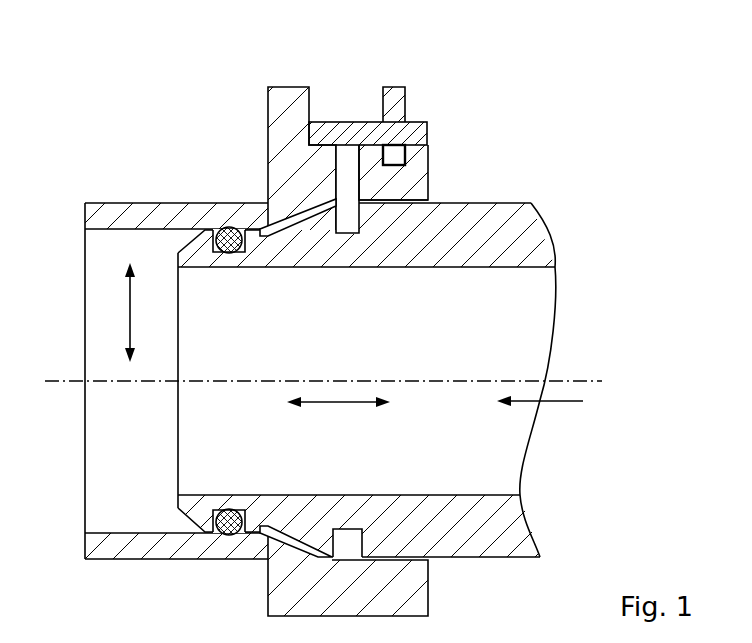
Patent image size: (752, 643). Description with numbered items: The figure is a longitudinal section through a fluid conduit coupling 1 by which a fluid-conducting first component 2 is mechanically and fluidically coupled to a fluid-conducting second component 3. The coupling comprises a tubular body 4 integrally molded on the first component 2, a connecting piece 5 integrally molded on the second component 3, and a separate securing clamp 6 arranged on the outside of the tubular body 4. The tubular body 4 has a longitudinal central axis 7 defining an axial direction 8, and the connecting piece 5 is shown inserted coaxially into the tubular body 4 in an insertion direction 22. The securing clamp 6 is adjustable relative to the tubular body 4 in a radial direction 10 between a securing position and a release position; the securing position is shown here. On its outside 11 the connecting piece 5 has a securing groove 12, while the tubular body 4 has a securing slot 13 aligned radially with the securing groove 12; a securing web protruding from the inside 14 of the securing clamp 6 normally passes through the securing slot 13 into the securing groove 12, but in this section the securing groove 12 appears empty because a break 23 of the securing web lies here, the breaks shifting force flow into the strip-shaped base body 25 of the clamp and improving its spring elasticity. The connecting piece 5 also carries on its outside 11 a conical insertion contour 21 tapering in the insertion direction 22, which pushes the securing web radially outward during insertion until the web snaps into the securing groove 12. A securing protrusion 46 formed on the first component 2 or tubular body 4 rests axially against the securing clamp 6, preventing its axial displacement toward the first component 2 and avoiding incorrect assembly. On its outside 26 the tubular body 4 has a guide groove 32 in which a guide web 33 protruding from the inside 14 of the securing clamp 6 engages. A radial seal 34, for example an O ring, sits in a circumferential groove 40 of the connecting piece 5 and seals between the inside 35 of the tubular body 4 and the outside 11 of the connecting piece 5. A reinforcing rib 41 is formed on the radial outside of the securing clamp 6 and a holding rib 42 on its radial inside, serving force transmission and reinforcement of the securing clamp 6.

The fluid conduit coupling 1 is at (373, 315).
The first component 2 is at (171, 326).
The second component 3 is at (429, 340).
The tubular body 4 is at (374, 314).
The connecting piece 5 is at (377, 340).
The securing clamp 6 is at (390, 79).
The longitudinal central axis 7 is at (588, 378).
The axial direction 8 is at (341, 405).
The radial direction 10 is at (128, 310).
The outside of the connecting piece 11 is at (518, 203).
The securing groove 12 is at (347, 235).
The securing slot 13 is at (342, 317).
The inside of the securing clamp 14 is at (425, 198).
The insertion contour 21 is at (290, 215).
The insertion direction 22 is at (557, 403).
The break 23 is at (296, 232).
The base body 25 is at (357, 123).
The outside of the tubular body 26 is at (172, 203).
The guide groove 32 is at (397, 206).
The guide web 33 is at (435, 229).
The radial seal 34 is at (229, 535).
The inside of the tubular body 35 is at (246, 238).
The circumferential groove 40 is at (231, 508).
The reinforcing rib 41 is at (393, 90).
The holding rib 42 is at (408, 168).
The securing protrusion 46 is at (289, 93).